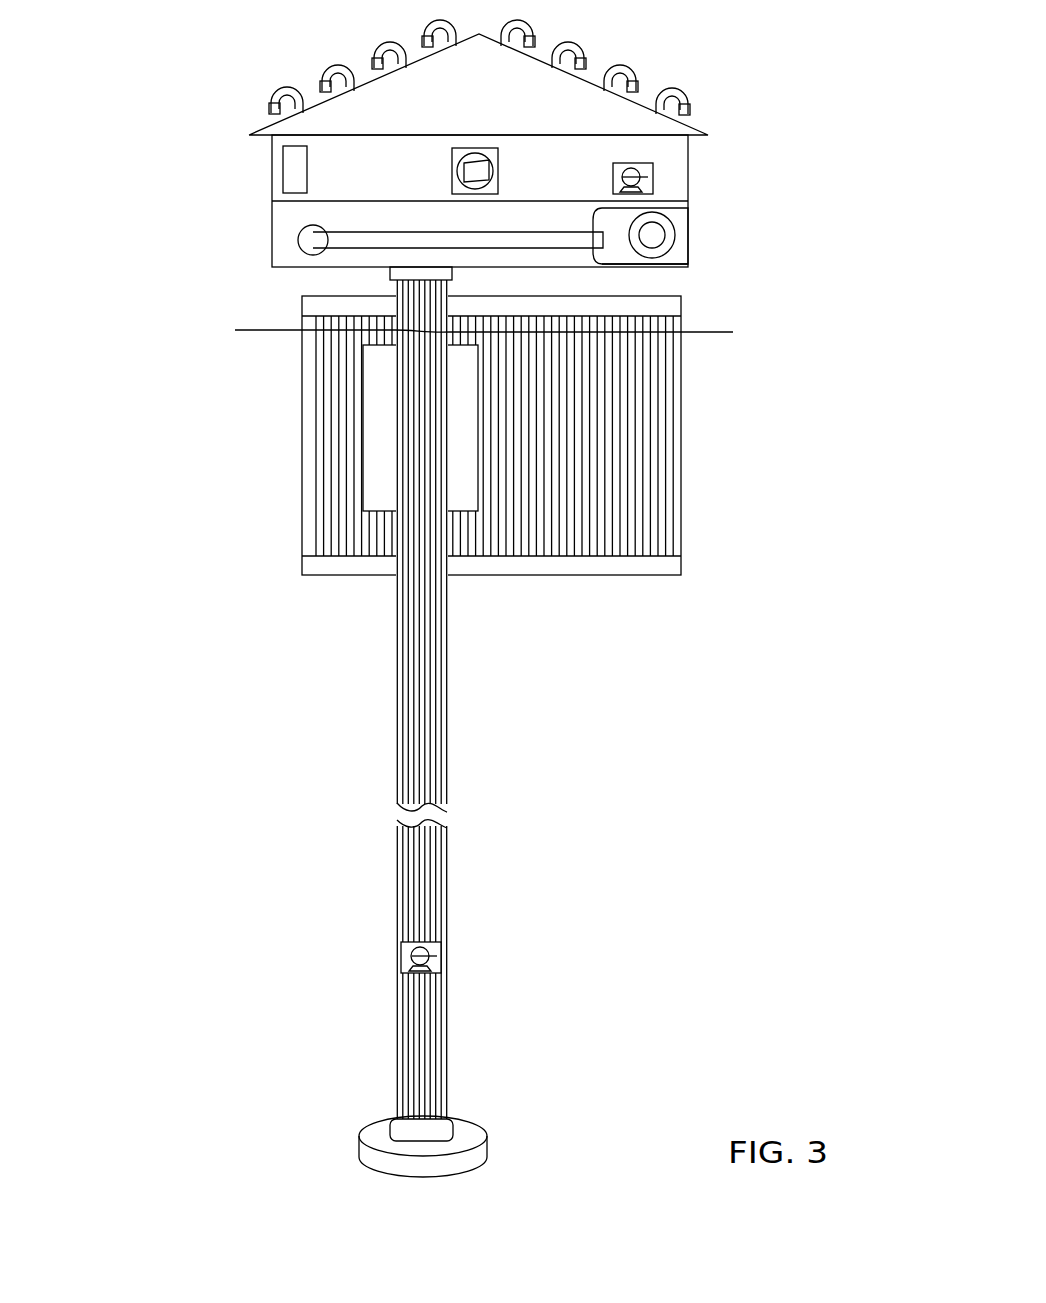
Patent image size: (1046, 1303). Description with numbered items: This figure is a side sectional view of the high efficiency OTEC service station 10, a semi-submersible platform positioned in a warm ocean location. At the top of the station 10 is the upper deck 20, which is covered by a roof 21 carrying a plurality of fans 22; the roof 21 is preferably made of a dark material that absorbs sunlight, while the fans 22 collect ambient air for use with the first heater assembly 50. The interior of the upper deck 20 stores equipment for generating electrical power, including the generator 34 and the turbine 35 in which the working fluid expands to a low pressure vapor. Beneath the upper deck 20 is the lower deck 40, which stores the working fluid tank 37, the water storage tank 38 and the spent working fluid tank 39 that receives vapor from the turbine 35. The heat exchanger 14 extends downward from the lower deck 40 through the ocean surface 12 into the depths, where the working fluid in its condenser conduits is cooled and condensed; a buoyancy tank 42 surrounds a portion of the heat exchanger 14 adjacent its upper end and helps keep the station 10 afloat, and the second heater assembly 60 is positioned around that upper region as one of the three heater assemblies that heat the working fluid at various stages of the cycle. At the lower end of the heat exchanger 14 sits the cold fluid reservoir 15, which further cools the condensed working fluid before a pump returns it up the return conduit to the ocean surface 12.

The OTEC service station 10 is at (124, 94).
The ocean surface 12 is at (255, 330).
The heat exchanger 14 is at (398, 740).
The cold fluid reservoir 15 is at (375, 1135).
The upper deck 20 is at (700, 189).
The roof 21 is at (590, 81).
The fans 22 is at (272, 101).
The generator 34 is at (470, 152).
The turbine 35 is at (475, 171).
The working fluid tank 37 is at (658, 234).
The water storage tank 38 is at (672, 243).
The spent working fluid tank 39 is at (672, 264).
The lower deck 40 is at (258, 242).
The buoyancy tank 42 is at (383, 455).
The first heater assembly 50 is at (283, 167).
The second heater assembly 60 is at (682, 525).